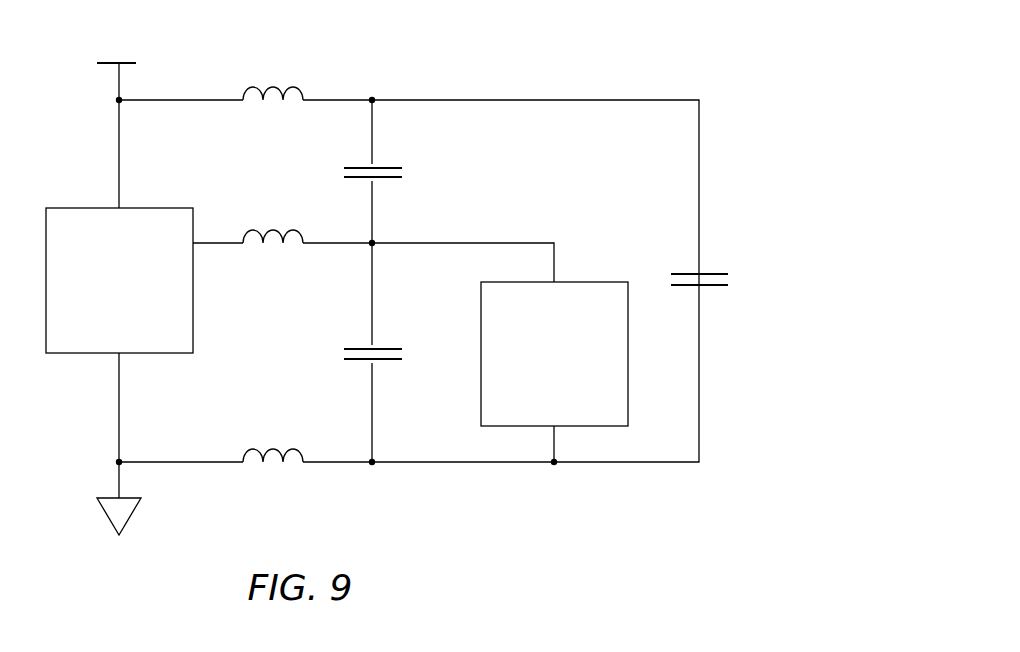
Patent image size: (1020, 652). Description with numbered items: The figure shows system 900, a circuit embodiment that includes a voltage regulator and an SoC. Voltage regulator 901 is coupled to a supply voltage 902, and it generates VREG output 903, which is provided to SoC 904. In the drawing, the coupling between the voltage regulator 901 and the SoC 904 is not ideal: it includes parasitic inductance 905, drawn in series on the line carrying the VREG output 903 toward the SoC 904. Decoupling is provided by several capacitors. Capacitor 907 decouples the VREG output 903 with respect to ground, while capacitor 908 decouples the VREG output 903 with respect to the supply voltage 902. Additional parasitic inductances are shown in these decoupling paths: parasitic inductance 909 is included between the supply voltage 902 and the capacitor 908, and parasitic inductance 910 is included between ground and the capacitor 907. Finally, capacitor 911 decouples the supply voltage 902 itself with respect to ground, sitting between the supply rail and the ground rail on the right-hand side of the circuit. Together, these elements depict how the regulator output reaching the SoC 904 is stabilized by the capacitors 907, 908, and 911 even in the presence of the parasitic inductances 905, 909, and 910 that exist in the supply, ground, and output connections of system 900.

The system 900 is at (617, 73).
The voltage regulator 901 is at (136, 314).
The supply voltage 902 is at (136, 53).
The VREG output 903 is at (430, 244).
The SoC 904 is at (571, 374).
The parasitic inductance 905 is at (290, 224).
The capacitor 907 is at (335, 371).
The capacitor 908 is at (440, 193).
The parasitic inductance 909 is at (290, 79).
The parasitic inductance 910 is at (290, 444).
The capacitor 911 is at (770, 299).